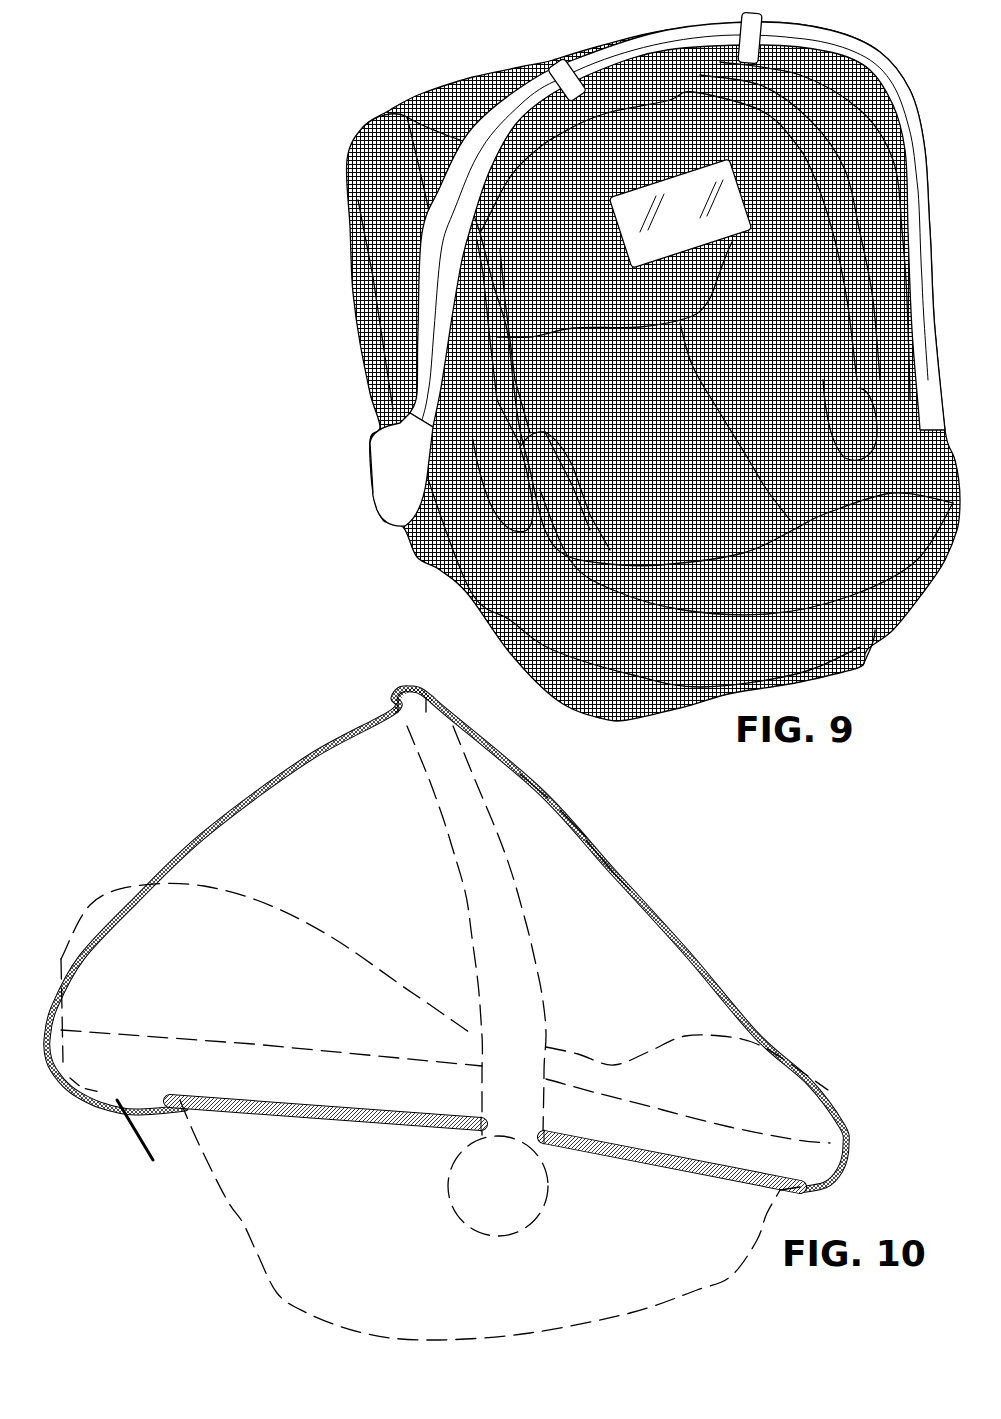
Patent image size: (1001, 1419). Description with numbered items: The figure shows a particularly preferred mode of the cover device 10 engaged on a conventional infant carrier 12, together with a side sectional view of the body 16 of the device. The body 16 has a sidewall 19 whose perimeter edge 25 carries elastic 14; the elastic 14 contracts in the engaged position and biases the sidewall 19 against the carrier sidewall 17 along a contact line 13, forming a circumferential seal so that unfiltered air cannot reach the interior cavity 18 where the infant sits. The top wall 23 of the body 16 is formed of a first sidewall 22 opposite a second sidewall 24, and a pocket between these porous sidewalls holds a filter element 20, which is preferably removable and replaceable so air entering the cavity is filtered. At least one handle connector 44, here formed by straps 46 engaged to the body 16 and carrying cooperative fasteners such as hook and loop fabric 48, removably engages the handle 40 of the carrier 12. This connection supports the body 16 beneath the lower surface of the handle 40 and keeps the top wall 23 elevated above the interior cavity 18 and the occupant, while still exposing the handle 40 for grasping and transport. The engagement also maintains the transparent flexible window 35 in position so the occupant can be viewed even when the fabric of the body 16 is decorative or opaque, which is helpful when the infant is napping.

In FIG. 9, the cover device 10 is at (250, 302).
In FIG. 10, the cover device 10 is at (150, 803).
In FIG. 10, the infant carrier 12 is at (247, 1213).
In FIG. 10, the contact line 13 is at (253, 1039).
In FIG. 10, the elastic 14 is at (413, 1127).
In FIG. 9, the body 16 is at (373, 223).
In FIG. 10, the body 16 is at (721, 990).
In FIG. 10, the carrier sidewall 17 is at (495, 1150).
In FIG. 10, the interior cavity 18 is at (444, 966).
In FIG. 9, the sidewall 19 is at (393, 320).
In FIG. 10, the sidewall 19 is at (170, 1080).
In FIG. 10, the filter element 20 is at (582, 833).
In FIG. 10, the first sidewall 22 is at (607, 869).
In FIG. 9, the top wall 23 is at (797, 130).
In FIG. 10, the top wall 23 is at (543, 792).
In FIG. 10, the second sidewall 24 is at (621, 880).
In FIG. 10, the perimeter edge 25 is at (152, 1141).
In FIG. 9, the transparent flexible window 35 is at (680, 213).
In FIG. 9, the handle 40 is at (387, 470).
In FIG. 10, the handle 40 is at (466, 854).
In FIG. 9, the handle connector 44 is at (556, 62).
In FIG. 10, the straps 46 is at (420, 694).
In FIG. 10, the hook and loop fabric 48 is at (393, 700).